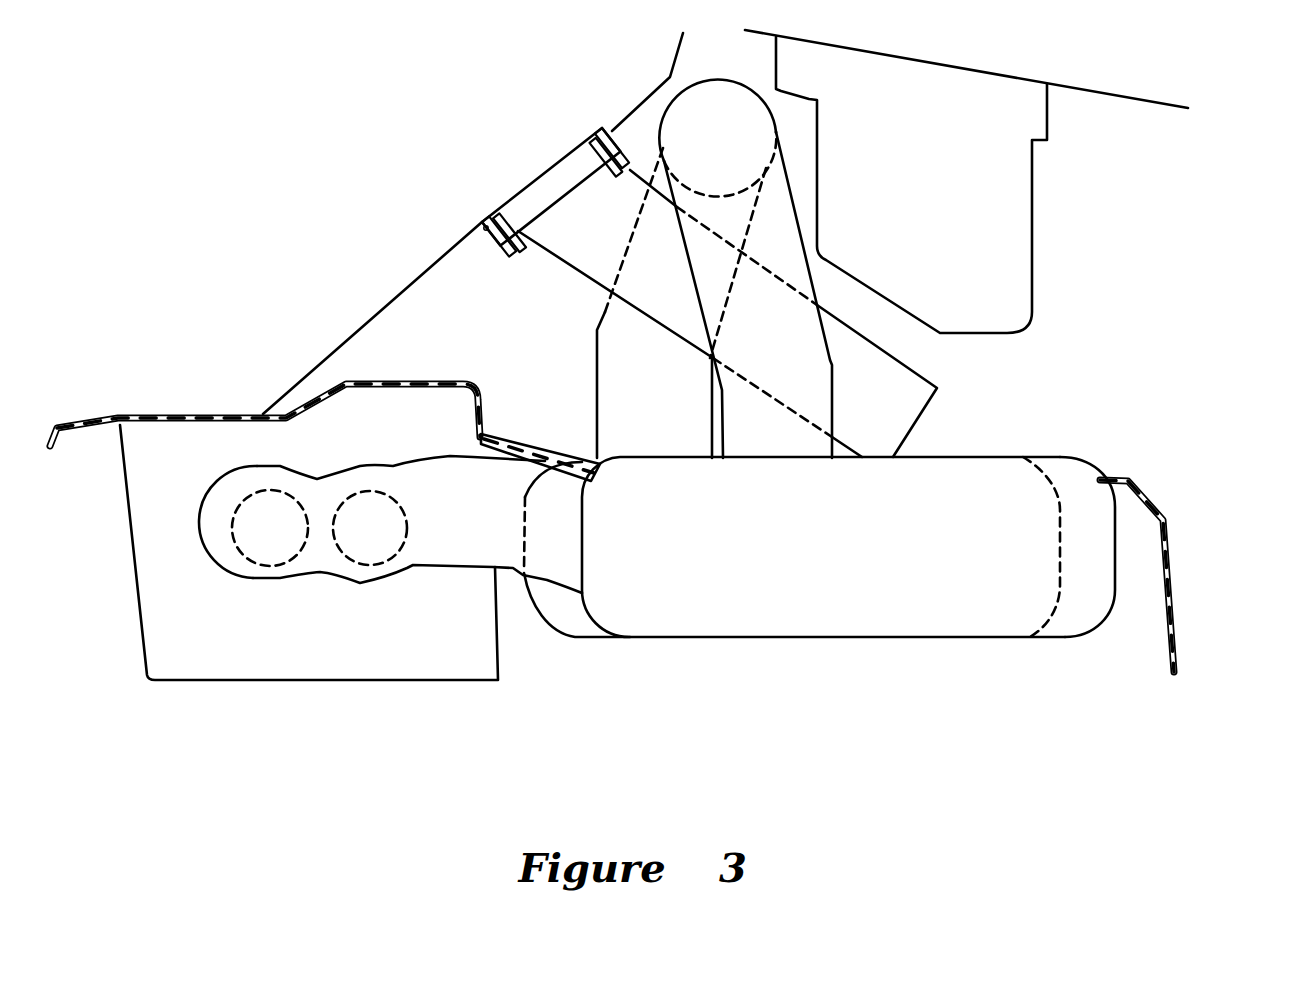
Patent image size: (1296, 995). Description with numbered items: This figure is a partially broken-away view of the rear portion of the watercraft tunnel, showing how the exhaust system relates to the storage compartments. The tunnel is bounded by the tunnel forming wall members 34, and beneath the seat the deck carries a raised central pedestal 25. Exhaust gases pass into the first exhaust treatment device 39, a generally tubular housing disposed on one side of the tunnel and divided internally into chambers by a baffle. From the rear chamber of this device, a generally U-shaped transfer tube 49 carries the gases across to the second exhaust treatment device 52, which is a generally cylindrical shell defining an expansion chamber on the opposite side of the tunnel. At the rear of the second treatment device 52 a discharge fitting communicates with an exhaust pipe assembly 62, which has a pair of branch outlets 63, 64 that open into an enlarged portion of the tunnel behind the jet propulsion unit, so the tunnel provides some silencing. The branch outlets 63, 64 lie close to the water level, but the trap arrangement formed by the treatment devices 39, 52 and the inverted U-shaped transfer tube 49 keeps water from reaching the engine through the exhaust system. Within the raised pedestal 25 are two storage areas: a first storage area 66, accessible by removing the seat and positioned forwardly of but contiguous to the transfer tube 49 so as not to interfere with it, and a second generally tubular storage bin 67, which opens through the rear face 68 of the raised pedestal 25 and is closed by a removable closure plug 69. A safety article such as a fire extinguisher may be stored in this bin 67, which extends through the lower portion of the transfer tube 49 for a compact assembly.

The raised central pedestal 25 is at (1132, 110).
The tunnel forming wall members 34 is at (1164, 537).
The first exhaust treatment device 39 is at (571, 648).
The transfer tube 49 is at (656, 111).
The second exhaust treatment device 52 is at (1080, 651).
The exhaust pipe assembly 62 is at (454, 580).
The branch outlet 63 is at (270, 545).
The branch outlet 64 is at (283, 632).
The first storage area 66 is at (1047, 242).
The second tubular storage bin 67 is at (944, 398).
The rear face 68 is at (334, 331).
The removable closure plug 69 is at (522, 173).